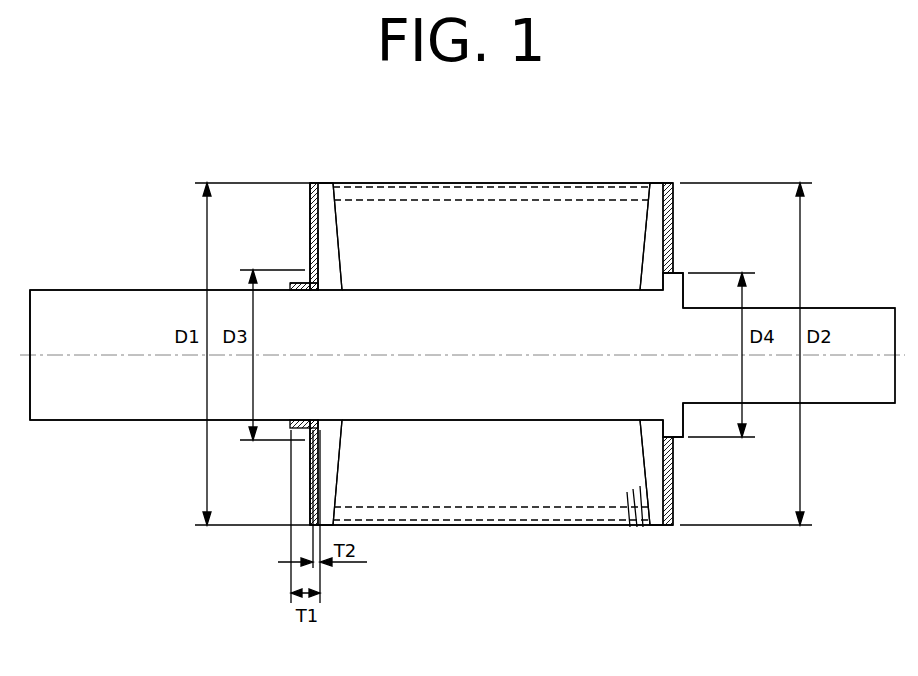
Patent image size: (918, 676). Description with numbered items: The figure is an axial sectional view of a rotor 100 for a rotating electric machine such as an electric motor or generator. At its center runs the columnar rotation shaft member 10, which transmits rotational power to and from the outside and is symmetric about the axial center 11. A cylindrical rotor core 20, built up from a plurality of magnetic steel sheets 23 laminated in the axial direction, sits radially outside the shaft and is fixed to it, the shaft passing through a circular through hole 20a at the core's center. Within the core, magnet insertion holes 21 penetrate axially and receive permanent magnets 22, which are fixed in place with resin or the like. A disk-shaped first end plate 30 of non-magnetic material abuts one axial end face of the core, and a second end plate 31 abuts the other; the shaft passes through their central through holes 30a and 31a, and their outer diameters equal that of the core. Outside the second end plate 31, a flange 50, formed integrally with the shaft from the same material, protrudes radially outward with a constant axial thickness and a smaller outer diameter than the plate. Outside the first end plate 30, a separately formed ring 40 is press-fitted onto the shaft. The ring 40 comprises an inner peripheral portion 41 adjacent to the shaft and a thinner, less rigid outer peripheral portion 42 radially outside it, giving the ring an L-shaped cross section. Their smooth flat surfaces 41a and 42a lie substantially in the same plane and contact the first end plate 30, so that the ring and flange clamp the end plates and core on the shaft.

The rotor 100 is at (149, 135).
The rotation shaft member 10 is at (118, 320).
The axial center 11 is at (52, 356).
The rotor core 20 is at (497, 213).
The through hole 20a is at (546, 290).
The magnet insertion holes 21 is at (487, 522).
The permanent magnets 22 is at (557, 520).
The magnetic steel sheets 23 is at (695, 577).
The first end plate 30 is at (323, 190).
The through hole 30a is at (343, 290).
The second end plate 31 is at (660, 190).
The through hole 31a is at (643, 290).
The ring 40 is at (320, 423).
The inner peripheral portion 41 is at (302, 285).
The surface 41a is at (318, 283).
The outer peripheral portion 42 is at (318, 282).
The surface 42a is at (320, 284).
The flange 50 is at (677, 284).